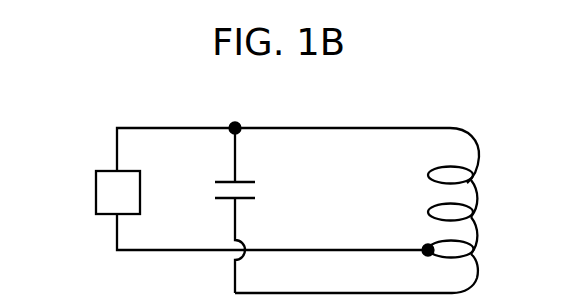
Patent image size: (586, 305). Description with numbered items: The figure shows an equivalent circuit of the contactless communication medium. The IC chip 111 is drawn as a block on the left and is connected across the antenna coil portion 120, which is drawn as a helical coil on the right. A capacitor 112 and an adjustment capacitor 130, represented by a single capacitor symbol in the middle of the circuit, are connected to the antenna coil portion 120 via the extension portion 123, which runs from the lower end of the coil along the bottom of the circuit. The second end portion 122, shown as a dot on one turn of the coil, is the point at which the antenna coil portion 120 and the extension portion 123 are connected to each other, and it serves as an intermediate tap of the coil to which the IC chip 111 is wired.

The IC chip 111 is at (96, 192).
The capacitor 112 is at (287, 210).
The adjustment capacitor 130 is at (257, 191).
The antenna coil portion 120 is at (391, 210).
The second end portion 122 is at (425, 247).
The extension portion 123 is at (478, 268).